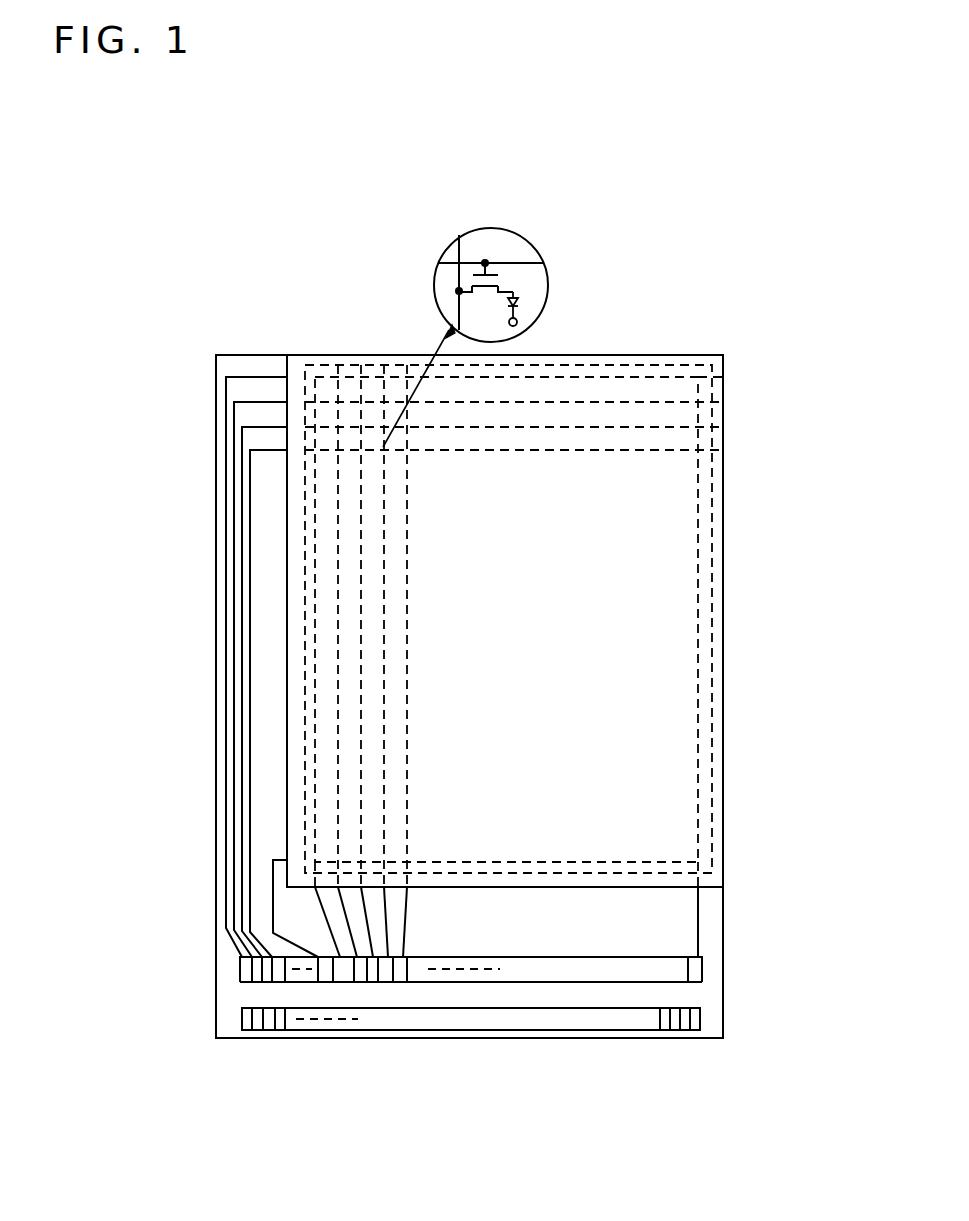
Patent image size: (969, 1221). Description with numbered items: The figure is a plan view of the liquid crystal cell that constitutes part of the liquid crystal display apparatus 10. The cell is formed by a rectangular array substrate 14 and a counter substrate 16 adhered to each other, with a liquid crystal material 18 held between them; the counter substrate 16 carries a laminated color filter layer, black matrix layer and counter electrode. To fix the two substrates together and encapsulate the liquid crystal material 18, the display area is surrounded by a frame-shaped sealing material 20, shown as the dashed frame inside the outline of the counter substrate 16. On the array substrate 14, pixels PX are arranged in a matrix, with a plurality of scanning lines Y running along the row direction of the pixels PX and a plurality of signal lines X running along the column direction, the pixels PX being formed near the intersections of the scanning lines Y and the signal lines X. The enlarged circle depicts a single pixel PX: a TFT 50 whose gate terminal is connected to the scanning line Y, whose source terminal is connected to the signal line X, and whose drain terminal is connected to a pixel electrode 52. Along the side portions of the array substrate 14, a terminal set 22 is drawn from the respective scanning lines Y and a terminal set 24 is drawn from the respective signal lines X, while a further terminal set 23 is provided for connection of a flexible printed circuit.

The liquid crystal display apparatus 10 is at (354, 201).
The array substrate 14 is at (713, 970).
The counter substrate 16 is at (650, 722).
The liquid crystal material 18 is at (517, 299).
The sealing material 20 is at (718, 838).
The terminal set 22 is at (283, 983).
The terminal set 23 is at (510, 1033).
The terminal set 24 is at (657, 982).
The TFT 50 is at (497, 273).
The pixel electrode 52 is at (516, 296).
The pixel PX is at (500, 256).
The signal line X is at (697, 918).
The scanning line Y is at (262, 378).